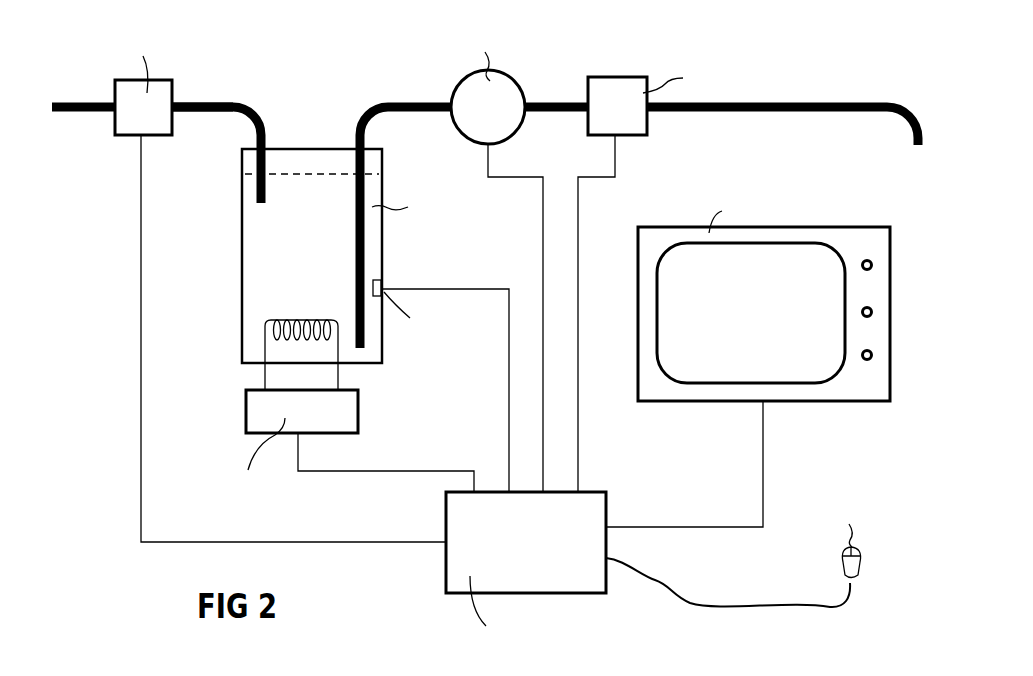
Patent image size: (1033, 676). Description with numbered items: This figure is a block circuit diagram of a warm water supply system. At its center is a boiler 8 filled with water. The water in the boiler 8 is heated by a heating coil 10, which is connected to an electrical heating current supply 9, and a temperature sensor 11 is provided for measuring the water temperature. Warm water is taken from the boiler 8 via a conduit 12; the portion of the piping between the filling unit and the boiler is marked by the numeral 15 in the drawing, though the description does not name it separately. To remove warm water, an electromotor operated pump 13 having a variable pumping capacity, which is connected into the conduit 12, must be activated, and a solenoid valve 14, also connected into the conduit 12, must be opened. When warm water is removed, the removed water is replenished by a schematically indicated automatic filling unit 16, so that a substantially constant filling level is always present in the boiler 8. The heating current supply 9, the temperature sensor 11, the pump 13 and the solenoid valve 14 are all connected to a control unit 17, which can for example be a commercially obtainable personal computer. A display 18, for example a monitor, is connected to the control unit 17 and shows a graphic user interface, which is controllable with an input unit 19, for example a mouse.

The boiler 8 is at (242, 297).
The heating current supply 9 is at (246, 411).
The heating coil 10 is at (302, 320).
The temperature sensor 11 is at (384, 285).
The conduit 12 is at (735, 112).
The pump 13 is at (453, 82).
The solenoid valve 14 is at (603, 78).
The pipe section 15 is at (197, 102).
The filling unit 16 is at (124, 136).
The control unit 17 is at (446, 574).
The display 18 is at (711, 402).
The input unit 19 is at (863, 565).